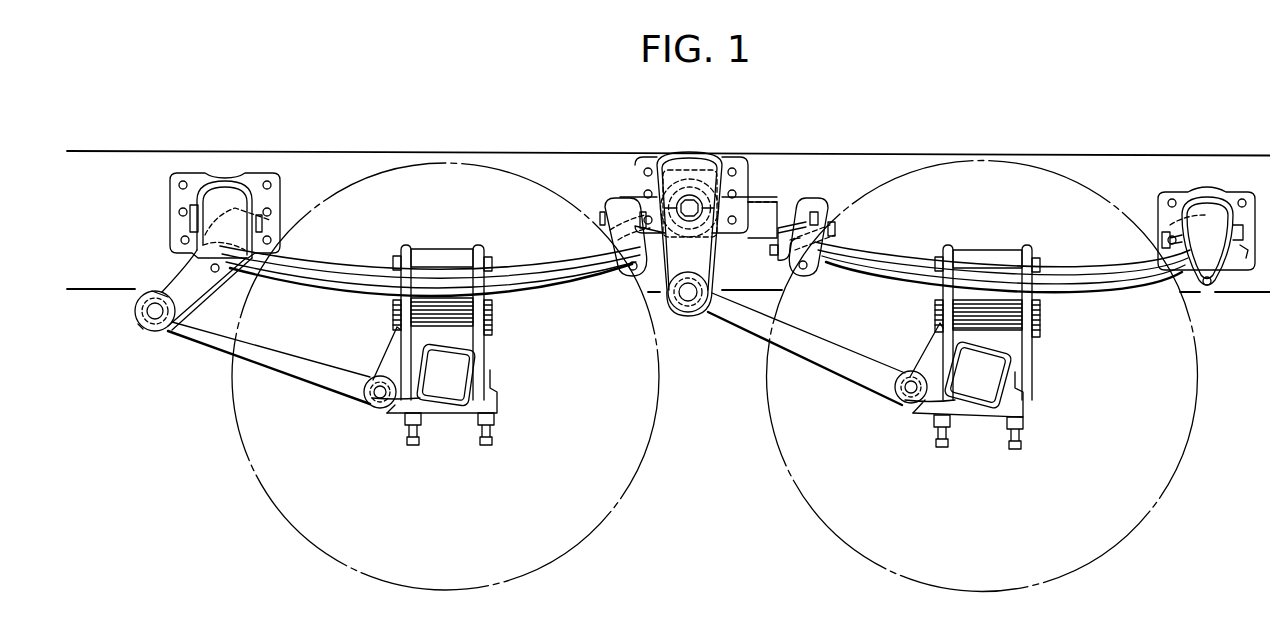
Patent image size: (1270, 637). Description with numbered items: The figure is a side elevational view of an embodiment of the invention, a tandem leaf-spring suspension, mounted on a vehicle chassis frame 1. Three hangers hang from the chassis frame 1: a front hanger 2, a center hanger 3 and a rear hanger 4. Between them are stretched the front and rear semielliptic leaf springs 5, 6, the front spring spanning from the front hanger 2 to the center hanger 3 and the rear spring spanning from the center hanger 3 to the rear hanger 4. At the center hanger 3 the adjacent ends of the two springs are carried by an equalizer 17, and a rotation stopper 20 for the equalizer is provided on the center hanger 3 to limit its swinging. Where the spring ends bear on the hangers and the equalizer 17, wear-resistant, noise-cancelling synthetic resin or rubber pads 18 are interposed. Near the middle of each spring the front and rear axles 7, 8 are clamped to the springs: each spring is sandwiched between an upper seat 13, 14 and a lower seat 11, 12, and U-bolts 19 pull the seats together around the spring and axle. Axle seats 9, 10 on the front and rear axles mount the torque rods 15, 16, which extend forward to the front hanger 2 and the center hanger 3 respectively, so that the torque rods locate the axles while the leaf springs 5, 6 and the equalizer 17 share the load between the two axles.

The chassis frame 1 is at (108, 157).
The front hanger 2 is at (228, 188).
The center hanger 3 is at (640, 178).
The rear hanger 4 is at (1210, 221).
The front semielliptic leaf spring 5 is at (358, 284).
The rear semielliptic leaf spring 6 is at (1071, 283).
The front axle 7 is at (441, 392).
The rear axle 8 is at (975, 396).
The axle seat 9 is at (391, 356).
The axle seat 10 is at (926, 361).
The lower seat 11 is at (392, 409).
The lower seat 12 is at (928, 404).
The upper seat 13 is at (441, 254).
The upper seat 14 is at (985, 255).
The torque rod 15 is at (287, 366).
The torque rod 16 is at (812, 351).
The equalizer 17 is at (764, 213).
The wear-resistant, noise-cancelling synthetic resin or rubber pad 18 is at (236, 215).
The U-bolt 19 is at (405, 246).
The rotation stopper 20 is at (720, 160).